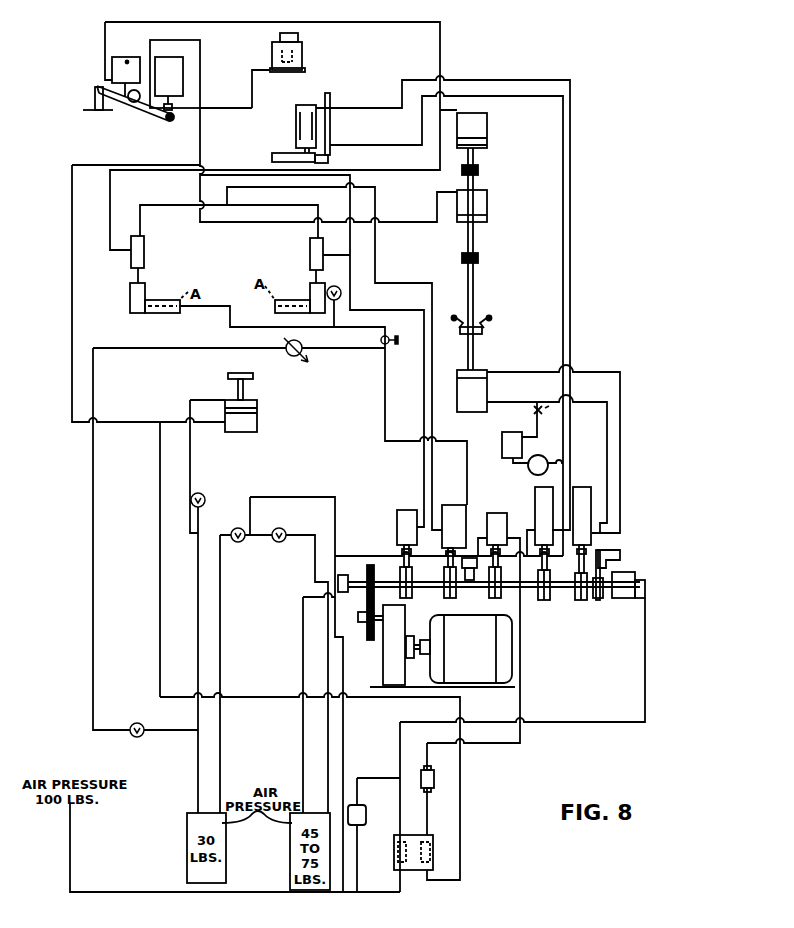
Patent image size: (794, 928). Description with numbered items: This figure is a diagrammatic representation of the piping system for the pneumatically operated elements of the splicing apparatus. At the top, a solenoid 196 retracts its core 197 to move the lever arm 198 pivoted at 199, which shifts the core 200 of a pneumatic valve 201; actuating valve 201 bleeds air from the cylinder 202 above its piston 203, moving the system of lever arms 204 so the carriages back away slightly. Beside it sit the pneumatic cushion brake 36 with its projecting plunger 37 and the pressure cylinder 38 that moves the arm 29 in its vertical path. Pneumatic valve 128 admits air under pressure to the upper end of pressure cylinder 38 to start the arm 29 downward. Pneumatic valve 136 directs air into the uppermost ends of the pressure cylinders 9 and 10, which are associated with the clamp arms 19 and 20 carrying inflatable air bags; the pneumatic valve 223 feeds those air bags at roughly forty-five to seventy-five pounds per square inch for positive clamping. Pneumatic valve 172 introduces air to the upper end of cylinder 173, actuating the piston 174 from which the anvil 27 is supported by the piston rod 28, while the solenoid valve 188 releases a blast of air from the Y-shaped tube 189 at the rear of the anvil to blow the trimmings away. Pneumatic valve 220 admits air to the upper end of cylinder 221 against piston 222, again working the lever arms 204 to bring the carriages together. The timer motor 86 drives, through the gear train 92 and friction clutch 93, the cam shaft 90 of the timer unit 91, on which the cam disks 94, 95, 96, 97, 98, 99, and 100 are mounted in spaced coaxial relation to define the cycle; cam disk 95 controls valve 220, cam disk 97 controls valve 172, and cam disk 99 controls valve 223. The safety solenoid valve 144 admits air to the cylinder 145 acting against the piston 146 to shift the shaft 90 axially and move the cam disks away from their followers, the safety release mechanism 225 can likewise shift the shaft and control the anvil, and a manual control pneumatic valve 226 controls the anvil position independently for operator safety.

The pneumatic valve 201 is at (126, 61).
The solenoid 196 is at (178, 70).
The core 197 is at (173, 104).
The pivot 199 is at (95, 87).
The core 200 is at (134, 107).
The lever arm 198 is at (165, 118).
The plunger 37 is at (300, 37).
The pneumatic cushion brake 36 is at (302, 60).
The pressure cylinder 38 is at (304, 105).
The arm 29 is at (330, 158).
The cylinder 202 is at (480, 203).
The piston 203 is at (486, 222).
The system of lever arms 204 is at (488, 318).
The piston 222 is at (484, 372).
The cylinder 221 is at (487, 394).
The Y-shaped tube 189 is at (523, 416).
The solenoid valve 188 is at (502, 445).
The pneumatic valve 128 is at (535, 500).
The pneumatic valve 220 is at (590, 482).
The pneumatic valve 223 is at (466, 505).
The pneumatic valve 172 is at (487, 526).
The pneumatic valve 136 is at (398, 518).
The pressure cylinder 10 is at (144, 251).
The clamp arm 20 is at (152, 300).
The pressure cylinder 9 is at (310, 250).
The clamp arm 19 is at (297, 300).
The anvil 27 is at (250, 375).
The piston rod 28 is at (243, 395).
The piston 174 is at (252, 413).
The cylinder 173 is at (254, 431).
The cam disk 100 is at (395, 571).
The cam disk 99 is at (448, 599).
The cam disk 98 is at (471, 582).
The cam disk 97 is at (495, 600).
The cam disk 96 is at (543, 601).
The cam shaft 90 is at (567, 601).
The cam disk 95 is at (583, 601).
The cam disk 94 is at (601, 598).
The timer unit 91 is at (631, 559).
The cylinder 145 is at (635, 578).
The piston 146 is at (646, 601).
The gear train 92 is at (372, 638).
The friction clutch 93 is at (358, 617).
The timer motor 86 is at (504, 657).
The manual control pneumatic valve 226 is at (436, 779).
The safety solenoid valve 144 is at (366, 816).
The safety release mechanism 225 is at (413, 868).